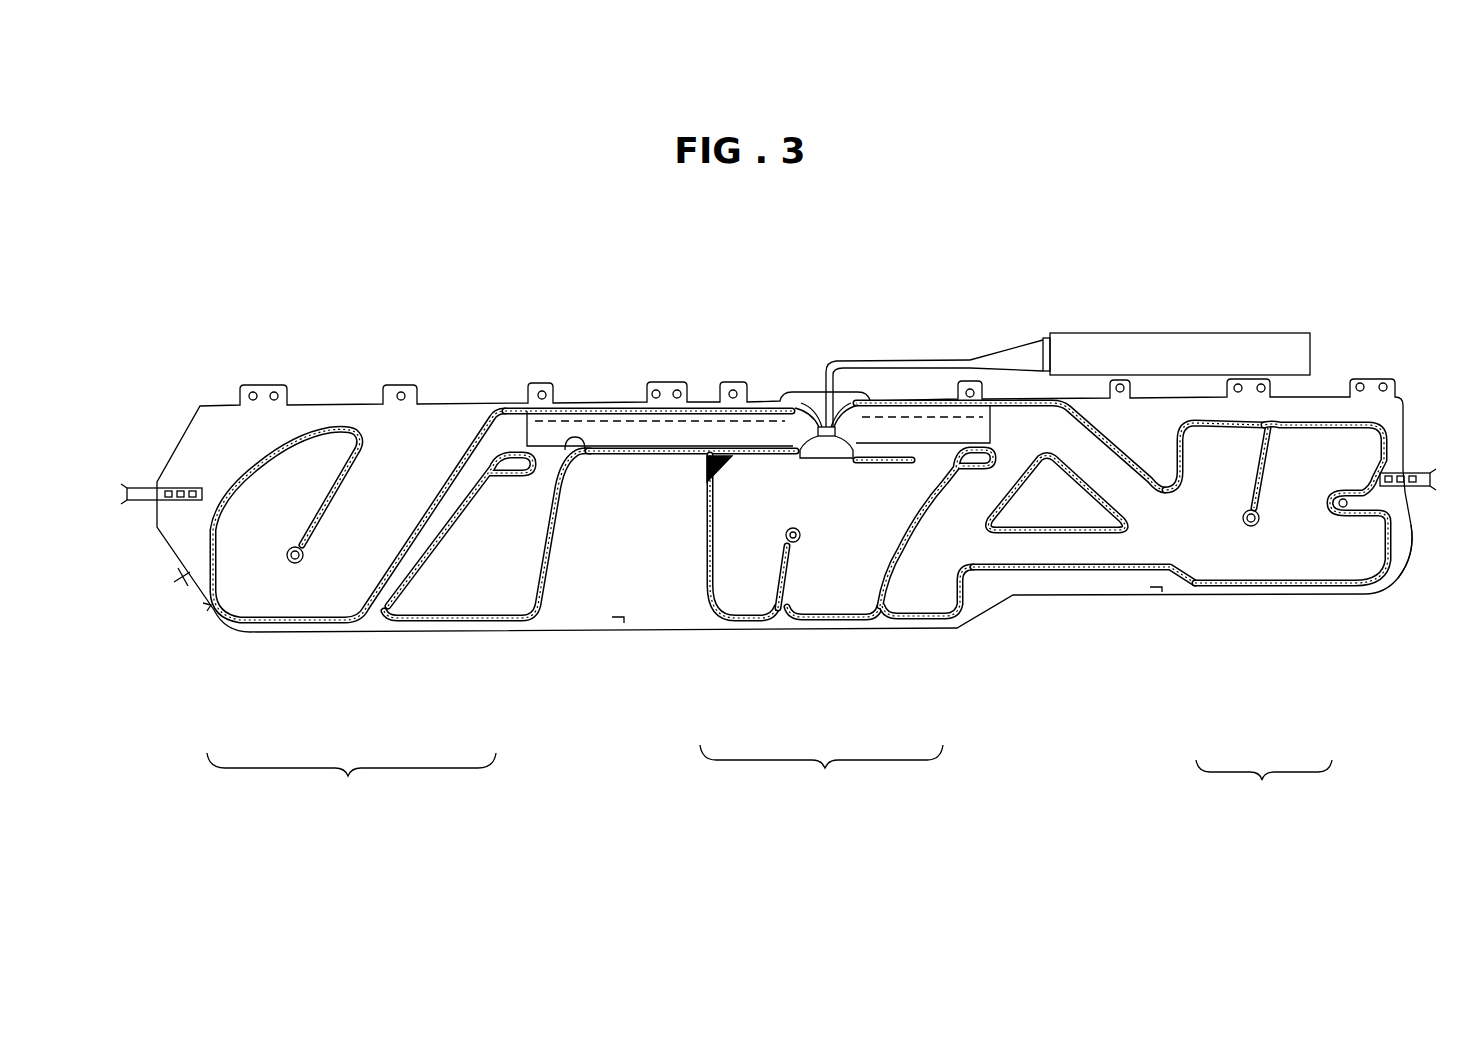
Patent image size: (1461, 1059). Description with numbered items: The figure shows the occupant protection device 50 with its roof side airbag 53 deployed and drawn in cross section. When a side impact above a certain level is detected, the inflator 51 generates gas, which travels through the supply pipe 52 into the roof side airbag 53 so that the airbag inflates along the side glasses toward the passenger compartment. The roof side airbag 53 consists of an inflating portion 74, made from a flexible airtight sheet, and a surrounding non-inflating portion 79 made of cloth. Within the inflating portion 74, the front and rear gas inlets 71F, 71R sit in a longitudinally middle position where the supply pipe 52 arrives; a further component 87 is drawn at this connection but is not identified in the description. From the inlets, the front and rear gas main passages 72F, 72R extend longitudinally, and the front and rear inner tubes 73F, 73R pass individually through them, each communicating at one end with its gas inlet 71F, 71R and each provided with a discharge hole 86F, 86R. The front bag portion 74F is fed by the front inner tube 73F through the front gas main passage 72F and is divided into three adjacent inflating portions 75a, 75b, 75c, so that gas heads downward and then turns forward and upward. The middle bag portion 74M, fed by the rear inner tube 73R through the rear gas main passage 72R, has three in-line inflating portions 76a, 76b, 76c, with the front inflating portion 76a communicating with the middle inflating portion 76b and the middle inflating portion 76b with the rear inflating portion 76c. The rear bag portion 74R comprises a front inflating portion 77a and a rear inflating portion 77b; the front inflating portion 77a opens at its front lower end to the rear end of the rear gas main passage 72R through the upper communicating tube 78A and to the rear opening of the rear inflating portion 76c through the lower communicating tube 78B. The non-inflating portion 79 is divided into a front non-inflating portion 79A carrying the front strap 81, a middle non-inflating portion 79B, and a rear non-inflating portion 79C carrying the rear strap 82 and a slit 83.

The occupant protection device 50 is at (236, 218).
The inflator 51 is at (1183, 340).
The supply pipe 52 is at (905, 357).
The roof side airbag 53 is at (348, 388).
The front gas inlet 71F is at (812, 408).
The rear gas inlet 71R is at (837, 413).
The front gas main passage 72F is at (622, 408).
The rear gas main passage 72R is at (933, 400).
The front inner tube 73F is at (590, 427).
The rear inner tube 73R is at (973, 430).
The inflating portion 74 is at (425, 416).
The front bag portion 74F is at (351, 783).
The middle bag portion 74M is at (821, 775).
The rear bag portion 74R is at (1264, 787).
The inflating portion 75a is at (253, 540).
The inflating portion 75b is at (357, 545).
The inflating portion 75c is at (467, 547).
The front inflating portion 76a is at (743, 595).
The middle inflating portion 76b is at (837, 597).
The rear inflating portion 76c is at (923, 597).
The front inflating portion 77a is at (1217, 517).
The rear inflating portion 77b is at (1302, 527).
The upper communicating tube 78A is at (1113, 485).
The lower communicating tube 78B is at (1023, 552).
The non-inflating portion 79 is at (190, 575).
The front non-inflating portion 79A is at (207, 605).
The middle non-inflating portion 79B is at (618, 618).
The rear non-inflating portion 79C is at (1157, 590).
The front strap 81 is at (147, 488).
The rear strap 82 is at (1423, 470).
The slit 83 is at (1403, 598).
The discharge hole 86F is at (572, 440).
The discharge hole 86R is at (925, 465).
The gas inlet connection 87 is at (813, 420).